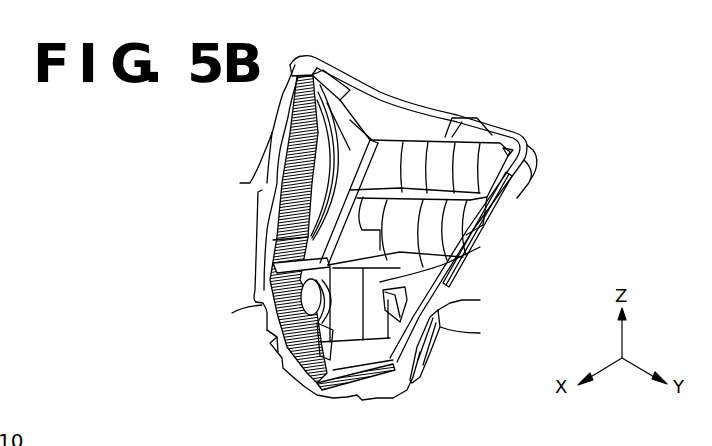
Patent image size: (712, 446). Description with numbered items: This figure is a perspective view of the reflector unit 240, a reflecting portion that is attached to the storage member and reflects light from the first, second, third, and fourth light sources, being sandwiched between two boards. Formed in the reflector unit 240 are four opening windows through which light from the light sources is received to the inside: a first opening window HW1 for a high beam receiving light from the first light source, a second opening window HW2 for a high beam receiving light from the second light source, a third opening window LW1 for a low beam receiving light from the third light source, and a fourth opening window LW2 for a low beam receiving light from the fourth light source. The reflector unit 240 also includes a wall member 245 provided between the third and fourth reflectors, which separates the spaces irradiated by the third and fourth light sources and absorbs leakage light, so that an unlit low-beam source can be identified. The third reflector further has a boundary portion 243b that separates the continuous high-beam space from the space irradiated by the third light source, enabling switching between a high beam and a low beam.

The reflector unit 240 is at (537, 116).
The wall member 245 is at (372, 140).
The boundary portion 243b is at (273, 240).
The third opening window LW1 is at (262, 174).
The fourth opening window LW2 is at (516, 184).
The first opening window HW1 is at (273, 307).
The second opening window HW2 is at (458, 330).